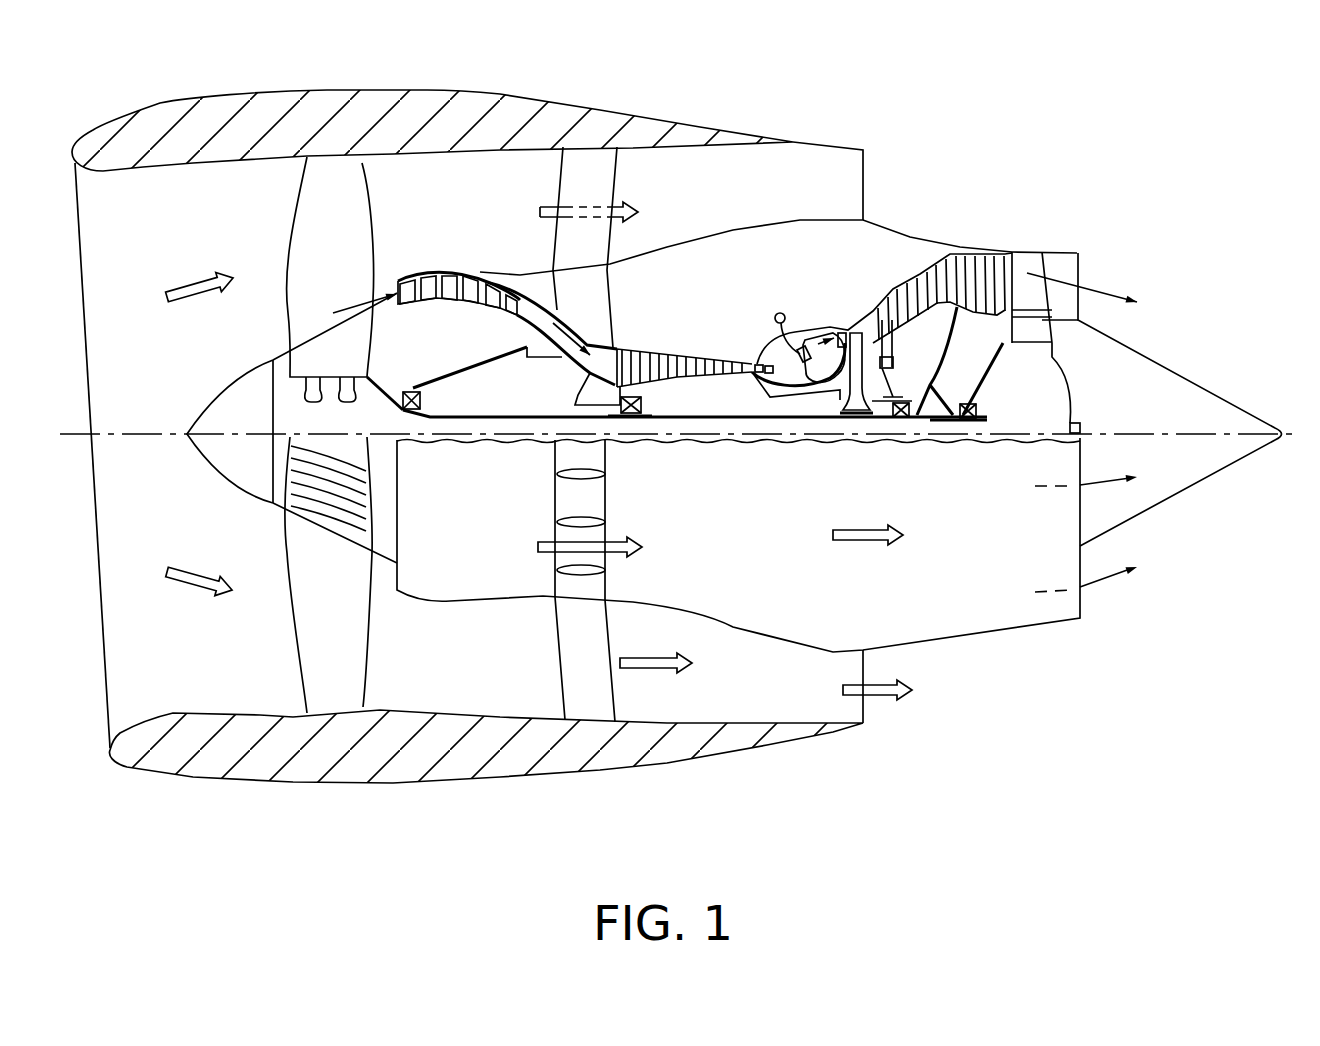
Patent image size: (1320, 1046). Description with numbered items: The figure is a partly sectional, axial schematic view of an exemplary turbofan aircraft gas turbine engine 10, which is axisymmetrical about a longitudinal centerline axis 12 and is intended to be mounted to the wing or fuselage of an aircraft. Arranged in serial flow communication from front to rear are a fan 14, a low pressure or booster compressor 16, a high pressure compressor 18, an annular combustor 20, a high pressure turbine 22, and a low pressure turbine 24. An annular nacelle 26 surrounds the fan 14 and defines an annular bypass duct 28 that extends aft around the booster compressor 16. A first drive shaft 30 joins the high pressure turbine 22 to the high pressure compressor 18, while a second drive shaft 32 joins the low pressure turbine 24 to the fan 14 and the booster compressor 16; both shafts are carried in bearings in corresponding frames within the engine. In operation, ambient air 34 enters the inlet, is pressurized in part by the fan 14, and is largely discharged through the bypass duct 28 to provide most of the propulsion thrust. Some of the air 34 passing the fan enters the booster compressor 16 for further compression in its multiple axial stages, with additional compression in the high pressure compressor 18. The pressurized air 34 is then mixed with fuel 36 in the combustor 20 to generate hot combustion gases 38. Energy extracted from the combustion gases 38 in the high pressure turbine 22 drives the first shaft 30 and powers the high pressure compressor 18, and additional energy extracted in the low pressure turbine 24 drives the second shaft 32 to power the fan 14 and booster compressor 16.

The turbofan aircraft gas turbine engine 10 is at (1028, 133).
The longitudinal centerline axis 12 is at (1167, 434).
The fan 14 is at (345, 265).
The booster compressor 16 is at (450, 277).
The high pressure compressor 18 is at (665, 350).
The annular combustor 20 is at (812, 330).
The high pressure turbine 22 is at (860, 320).
The low pressure turbine 24 is at (960, 263).
The annular nacelle 26 is at (368, 142).
The bypass duct 28 is at (750, 200).
The first drive shaft 30 is at (765, 390).
The second drive shaft 32 is at (690, 416).
The ambient air 34 is at (532, 328).
The fuel 36 is at (777, 313).
The hot combustion gases 38 is at (818, 344).